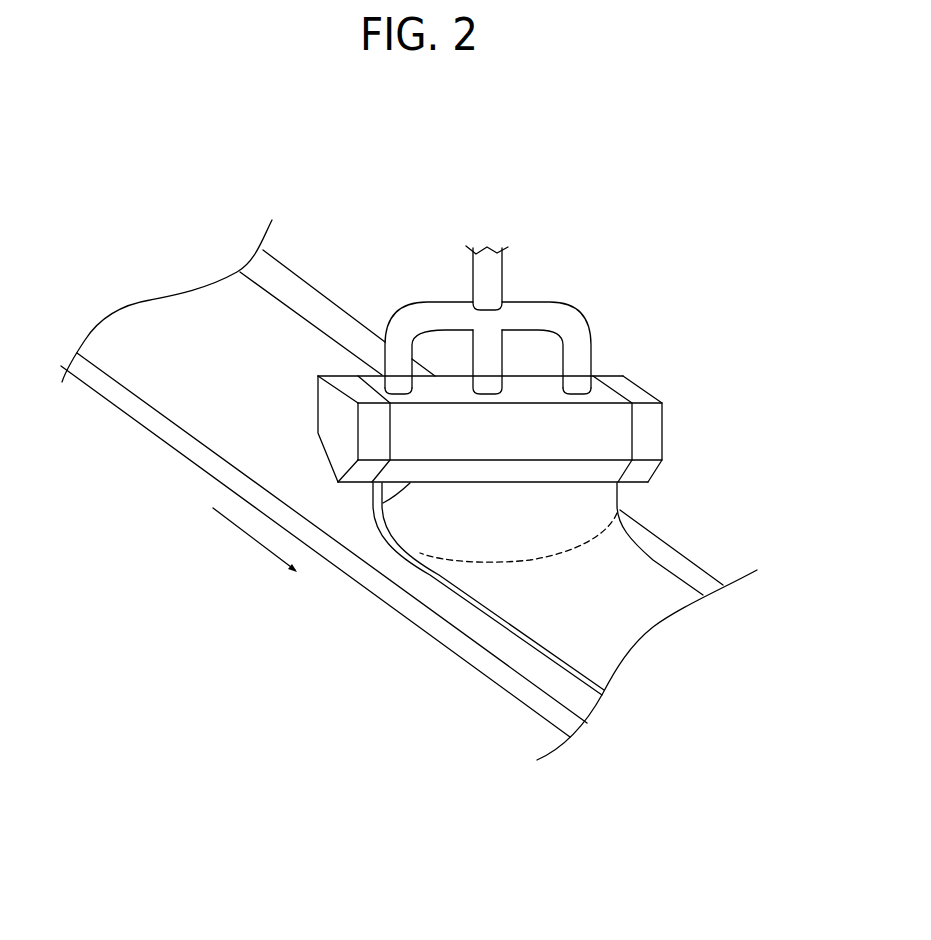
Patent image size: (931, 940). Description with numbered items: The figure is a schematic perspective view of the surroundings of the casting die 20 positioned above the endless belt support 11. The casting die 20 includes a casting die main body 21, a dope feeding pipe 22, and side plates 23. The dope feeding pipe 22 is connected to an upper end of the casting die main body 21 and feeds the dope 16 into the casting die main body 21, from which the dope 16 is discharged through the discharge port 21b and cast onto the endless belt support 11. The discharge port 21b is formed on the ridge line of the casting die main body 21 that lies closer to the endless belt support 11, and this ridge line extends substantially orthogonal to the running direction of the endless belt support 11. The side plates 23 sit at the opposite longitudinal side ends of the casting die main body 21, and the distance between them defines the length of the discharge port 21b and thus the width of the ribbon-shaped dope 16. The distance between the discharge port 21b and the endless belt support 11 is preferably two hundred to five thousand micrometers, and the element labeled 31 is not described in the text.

The endless belt support 11 is at (458, 613).
The dope 16 is at (417, 531).
The casting die 20 is at (524, 450).
The casting die main body 21 is at (445, 430).
The discharge port 21b is at (370, 508).
The dope feeding pipe 22 is at (495, 288).
The side plates 23 is at (330, 408).
The solder 31 is at (623, 513).